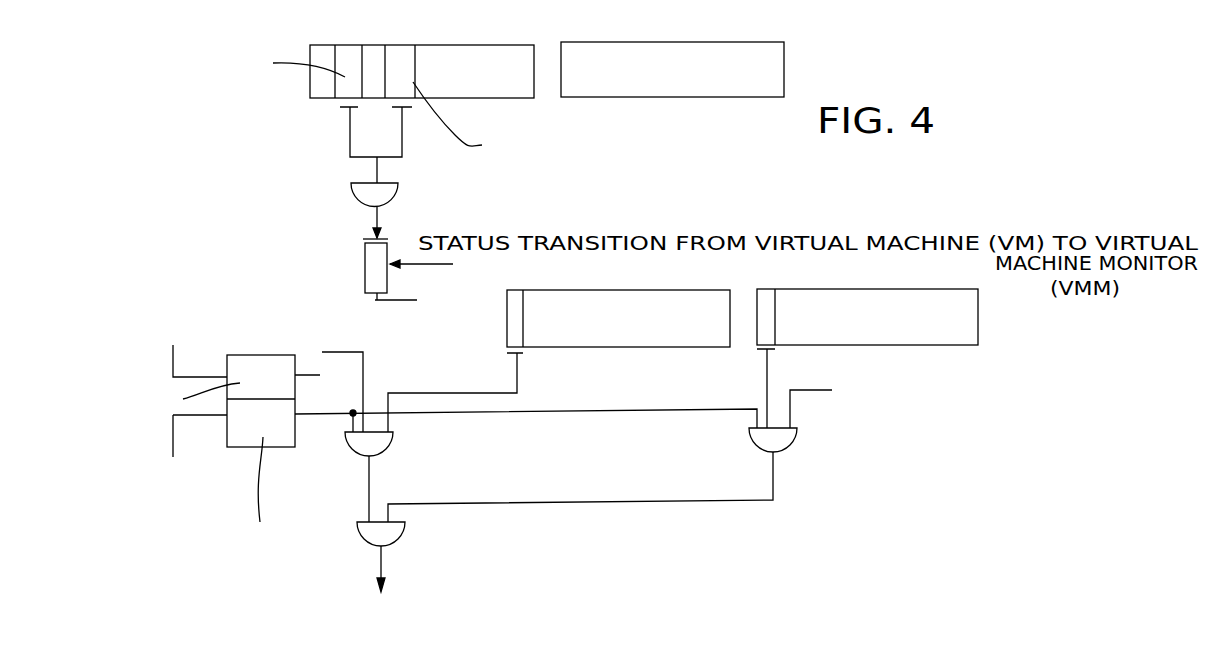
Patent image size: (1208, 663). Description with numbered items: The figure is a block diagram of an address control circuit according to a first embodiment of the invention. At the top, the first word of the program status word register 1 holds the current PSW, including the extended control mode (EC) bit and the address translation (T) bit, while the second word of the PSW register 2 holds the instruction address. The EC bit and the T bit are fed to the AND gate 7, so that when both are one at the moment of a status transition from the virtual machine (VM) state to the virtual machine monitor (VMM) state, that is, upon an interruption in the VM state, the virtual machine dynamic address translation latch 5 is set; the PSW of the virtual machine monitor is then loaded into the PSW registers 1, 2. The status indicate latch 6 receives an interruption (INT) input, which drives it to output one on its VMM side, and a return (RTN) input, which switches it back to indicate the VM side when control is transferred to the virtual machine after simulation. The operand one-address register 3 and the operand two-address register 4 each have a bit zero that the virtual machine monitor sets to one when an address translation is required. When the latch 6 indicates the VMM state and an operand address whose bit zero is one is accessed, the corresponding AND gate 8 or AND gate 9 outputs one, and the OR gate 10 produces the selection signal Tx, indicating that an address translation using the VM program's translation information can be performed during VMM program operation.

The first word of program status word register 1 is at (505, 43).
The second word of PSW register 2 is at (747, 38).
The operand one-address register 3 is at (643, 288).
The operand two-address register 4 is at (886, 285).
The virtual machine dynamic address translation latch 5 is at (362, 268).
The status indicate latch 6 is at (286, 447).
The AND gate 7 is at (398, 190).
The AND gate 8 is at (393, 445).
The AND gate 9 is at (797, 440).
The OR gate 10 is at (405, 535).